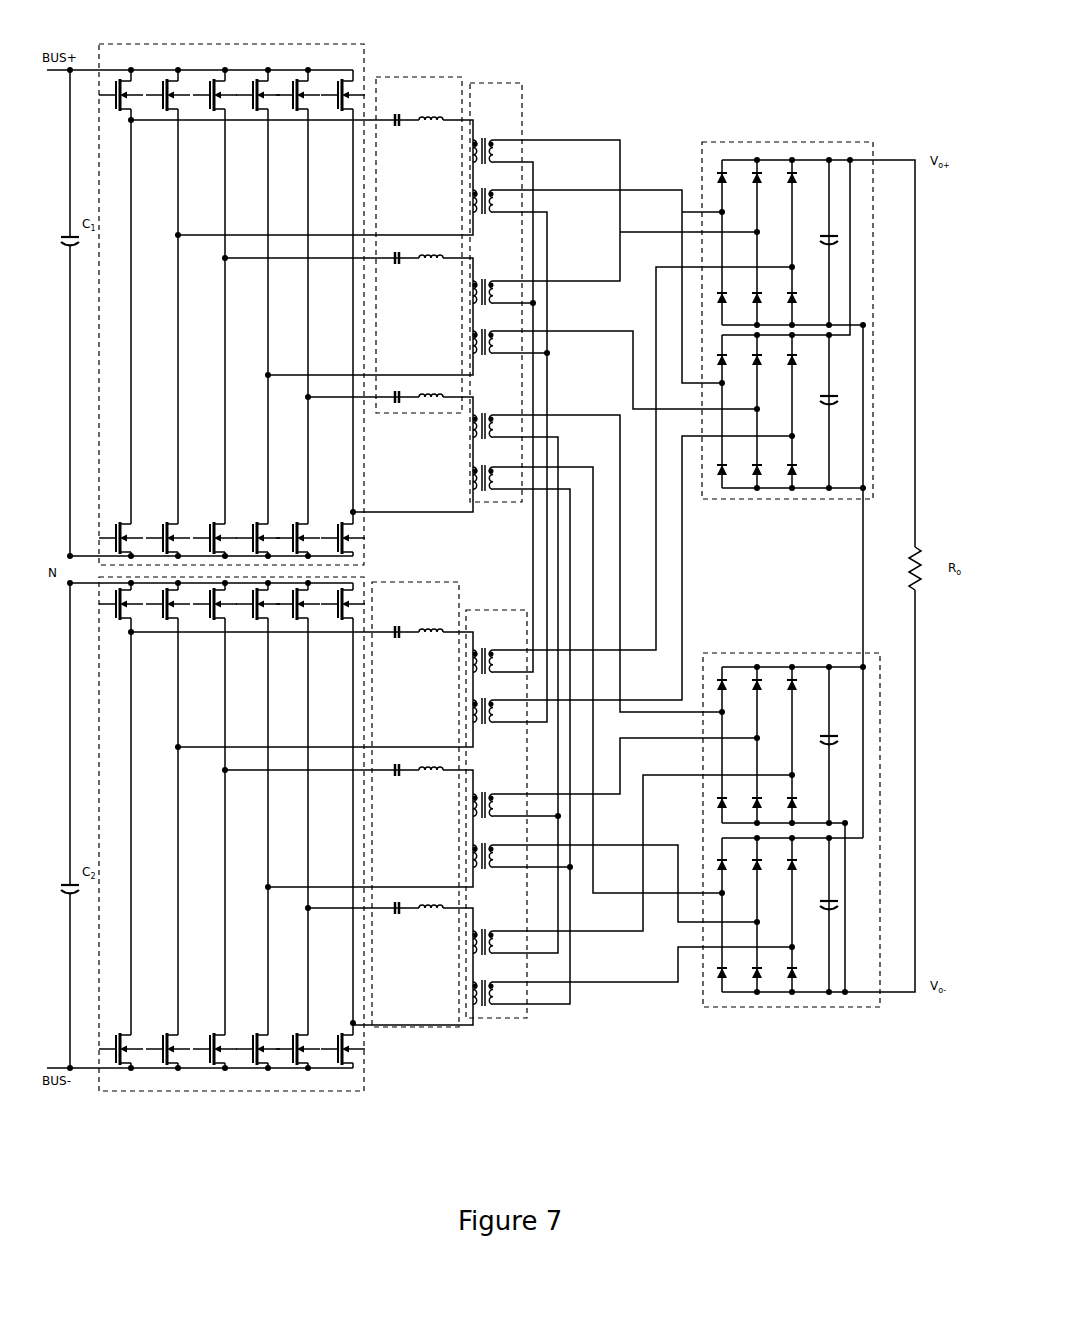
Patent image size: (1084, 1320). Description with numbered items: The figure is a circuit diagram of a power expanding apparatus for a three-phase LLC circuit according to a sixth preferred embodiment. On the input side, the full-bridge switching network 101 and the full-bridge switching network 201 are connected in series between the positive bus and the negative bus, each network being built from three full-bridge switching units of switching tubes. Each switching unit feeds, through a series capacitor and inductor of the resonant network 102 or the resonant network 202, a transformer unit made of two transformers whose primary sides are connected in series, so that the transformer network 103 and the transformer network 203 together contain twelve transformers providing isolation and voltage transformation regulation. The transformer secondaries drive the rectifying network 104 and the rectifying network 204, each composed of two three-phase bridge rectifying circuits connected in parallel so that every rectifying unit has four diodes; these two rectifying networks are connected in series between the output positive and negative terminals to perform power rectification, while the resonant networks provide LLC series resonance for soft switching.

The full-bridge switching network 101 is at (115, 45).
The resonant network 102 is at (377, 77).
The transformer network 103 is at (470, 83).
The rectifying network 104 is at (708, 142).
The full-bridge switching network 201 is at (290, 1093).
The resonant network 202 is at (455, 1027).
The transformer network 203 is at (525, 1018).
The rectifying network 204 is at (810, 1007).